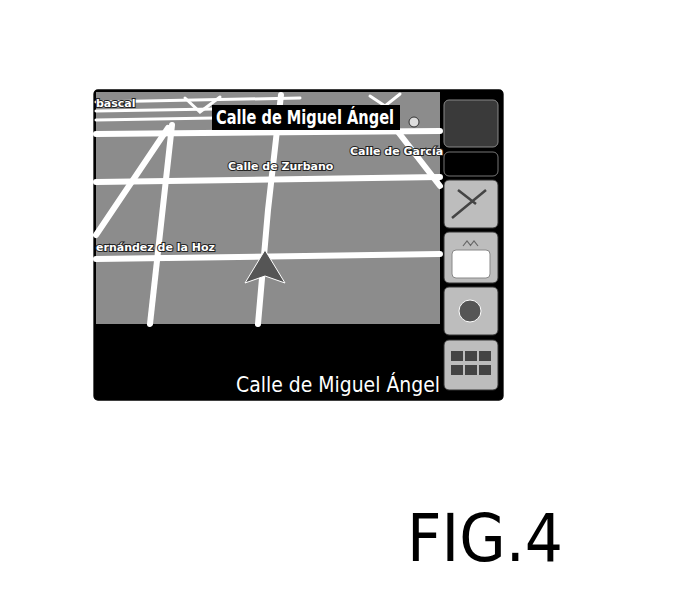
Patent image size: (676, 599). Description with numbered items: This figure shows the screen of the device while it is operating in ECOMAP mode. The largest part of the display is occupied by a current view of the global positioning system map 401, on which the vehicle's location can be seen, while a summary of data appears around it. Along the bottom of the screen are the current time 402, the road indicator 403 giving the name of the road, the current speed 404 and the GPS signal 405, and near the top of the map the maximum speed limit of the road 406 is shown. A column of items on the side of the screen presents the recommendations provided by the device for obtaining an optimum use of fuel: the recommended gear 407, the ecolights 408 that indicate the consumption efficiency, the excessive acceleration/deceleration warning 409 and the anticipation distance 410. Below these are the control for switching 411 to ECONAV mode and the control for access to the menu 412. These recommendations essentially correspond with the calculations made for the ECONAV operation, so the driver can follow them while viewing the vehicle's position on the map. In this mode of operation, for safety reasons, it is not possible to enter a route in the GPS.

The global positioning system map 401 is at (213, 196).
The current time 402 is at (236, 346).
The road indicator 403 is at (270, 390).
The current speed 404 is at (338, 362).
The GPS signal 405 is at (430, 357).
The maximum speed limit of the road 406 is at (413, 108).
The recommended gear 407 is at (453, 105).
The ecolights 408 is at (488, 160).
The excessive acceleration/deceleration warning 409 is at (488, 209).
The anticipation distance 410 is at (488, 275).
The switching to ECONAV mode 411 is at (488, 327).
The access to the menu 412 is at (488, 383).